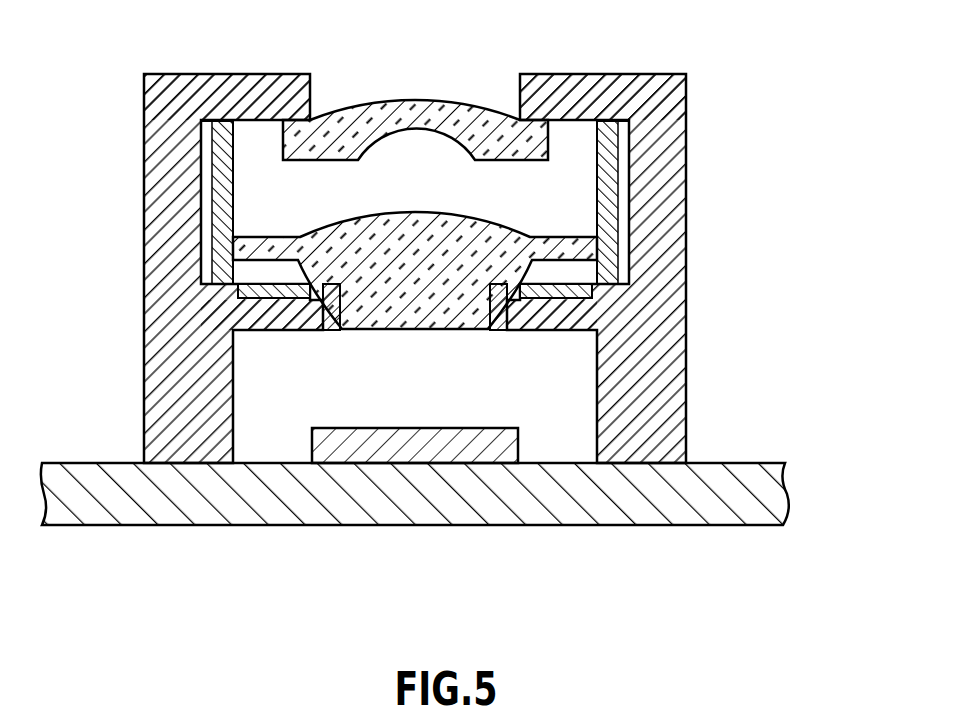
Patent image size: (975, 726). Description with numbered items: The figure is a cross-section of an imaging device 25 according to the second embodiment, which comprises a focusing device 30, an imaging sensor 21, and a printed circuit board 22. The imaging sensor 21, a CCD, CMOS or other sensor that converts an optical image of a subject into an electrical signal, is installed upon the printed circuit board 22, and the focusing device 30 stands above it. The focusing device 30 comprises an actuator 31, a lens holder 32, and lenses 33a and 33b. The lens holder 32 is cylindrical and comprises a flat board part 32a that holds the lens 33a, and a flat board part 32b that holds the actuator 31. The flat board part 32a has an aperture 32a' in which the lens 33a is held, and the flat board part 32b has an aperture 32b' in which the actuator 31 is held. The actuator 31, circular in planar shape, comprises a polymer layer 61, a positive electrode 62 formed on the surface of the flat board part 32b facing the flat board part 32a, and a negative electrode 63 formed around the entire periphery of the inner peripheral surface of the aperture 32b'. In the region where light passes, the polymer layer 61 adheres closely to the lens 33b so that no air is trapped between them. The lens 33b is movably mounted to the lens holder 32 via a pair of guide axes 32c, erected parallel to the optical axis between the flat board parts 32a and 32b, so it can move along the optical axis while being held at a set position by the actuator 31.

The imaging sensor 21 is at (343, 452).
The printed circuit board 22 is at (183, 507).
The imaging device 25 is at (840, 70).
The focusing device 30 is at (777, 70).
The actuator 31 is at (77, 168).
The lens holder 32 is at (163, 115).
The flat board part 32a is at (227, 73).
The aperture 32a' is at (598, 66).
The flat board part 32b is at (632, 299).
The aperture 32b' is at (641, 249).
The guide axis 32c is at (227, 165).
The lens 33a is at (393, 110).
The lens 33b is at (523, 237).
The polymer layer 61 is at (318, 262).
The positive electrode 62 is at (253, 288).
The negative electrode 63 is at (330, 322).